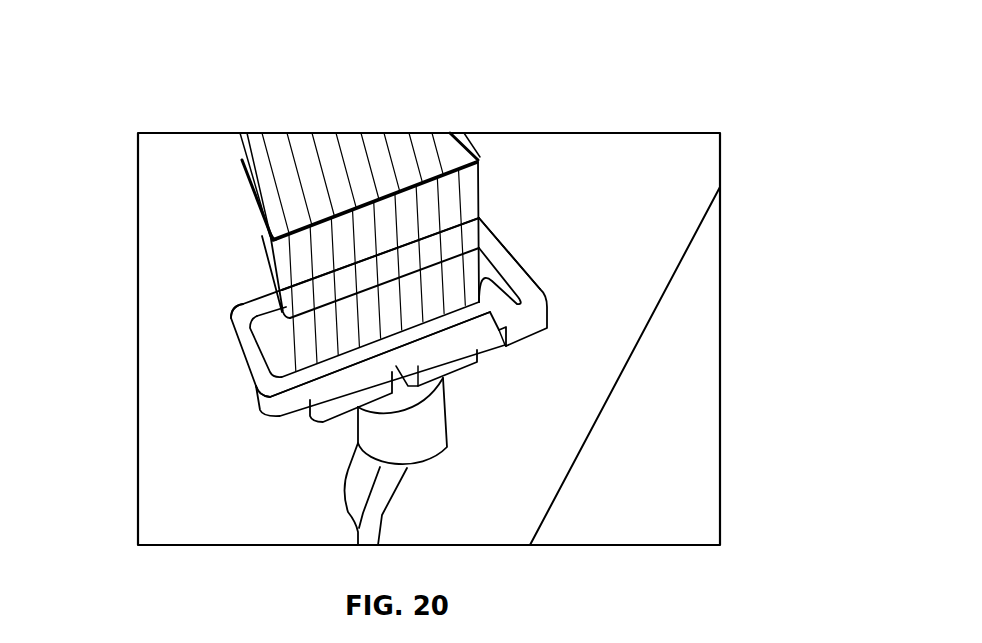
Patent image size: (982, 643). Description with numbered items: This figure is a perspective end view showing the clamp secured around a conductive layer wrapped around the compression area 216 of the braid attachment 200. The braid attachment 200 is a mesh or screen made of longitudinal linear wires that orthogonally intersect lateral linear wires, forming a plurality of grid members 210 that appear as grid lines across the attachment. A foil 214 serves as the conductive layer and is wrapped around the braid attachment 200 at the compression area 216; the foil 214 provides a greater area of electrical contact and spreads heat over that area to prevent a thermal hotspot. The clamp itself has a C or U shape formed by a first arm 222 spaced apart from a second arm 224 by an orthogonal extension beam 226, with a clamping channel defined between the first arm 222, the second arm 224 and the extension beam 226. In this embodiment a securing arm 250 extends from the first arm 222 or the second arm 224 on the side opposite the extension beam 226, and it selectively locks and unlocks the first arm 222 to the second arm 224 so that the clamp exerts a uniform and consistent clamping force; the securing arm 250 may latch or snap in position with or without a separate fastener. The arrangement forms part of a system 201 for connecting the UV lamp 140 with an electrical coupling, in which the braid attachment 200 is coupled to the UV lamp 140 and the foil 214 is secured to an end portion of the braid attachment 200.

The UV lamp 140 is at (263, 73).
The system 201 is at (162, 223).
The braid attachment 200 is at (240, 357).
The grid members 210 is at (466, 133).
The foil 214 is at (496, 249).
The compression area 216 is at (481, 220).
The first arm 222 is at (291, 414).
The second arm 224 is at (243, 314).
The extension beam 226 is at (248, 380).
The securing arm 250 is at (517, 277).